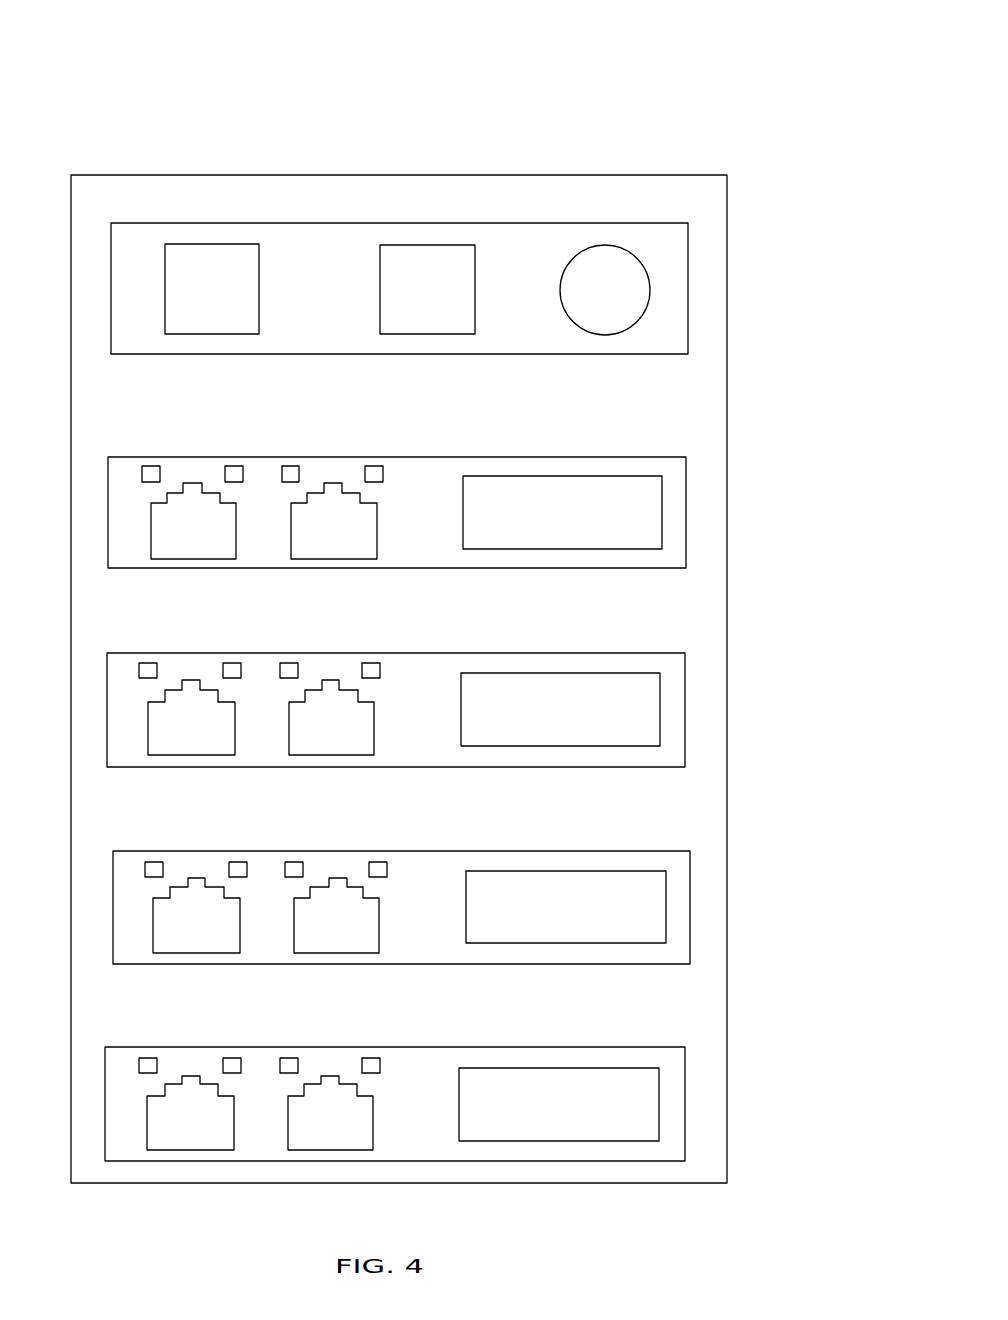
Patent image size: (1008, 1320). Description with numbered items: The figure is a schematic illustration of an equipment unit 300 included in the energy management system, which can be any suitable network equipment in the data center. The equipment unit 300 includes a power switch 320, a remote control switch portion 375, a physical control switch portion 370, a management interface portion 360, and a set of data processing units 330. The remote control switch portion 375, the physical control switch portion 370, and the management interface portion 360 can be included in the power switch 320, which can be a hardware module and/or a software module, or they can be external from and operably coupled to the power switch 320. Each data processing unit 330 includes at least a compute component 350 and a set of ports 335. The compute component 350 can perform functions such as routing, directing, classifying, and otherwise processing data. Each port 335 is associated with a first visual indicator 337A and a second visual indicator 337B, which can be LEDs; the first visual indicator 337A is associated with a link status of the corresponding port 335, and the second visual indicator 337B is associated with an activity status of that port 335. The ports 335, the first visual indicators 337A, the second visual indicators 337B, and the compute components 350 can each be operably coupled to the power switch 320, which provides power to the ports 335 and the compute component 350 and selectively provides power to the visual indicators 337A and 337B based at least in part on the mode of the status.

The equipment unit 300 is at (170, 78).
The power switch 320 is at (150, 223).
The remote control switch portion 375 is at (217, 244).
The management interface portion 360 is at (430, 245).
The physical control switch portion 370 is at (605, 245).
The data processing unit 330 is at (685, 1085).
The compute component 350 is at (577, 408).
The port 335 is at (330, 1076).
The first visual indicator 337A is at (283, 388).
The second visual indicator 337B is at (377, 466).